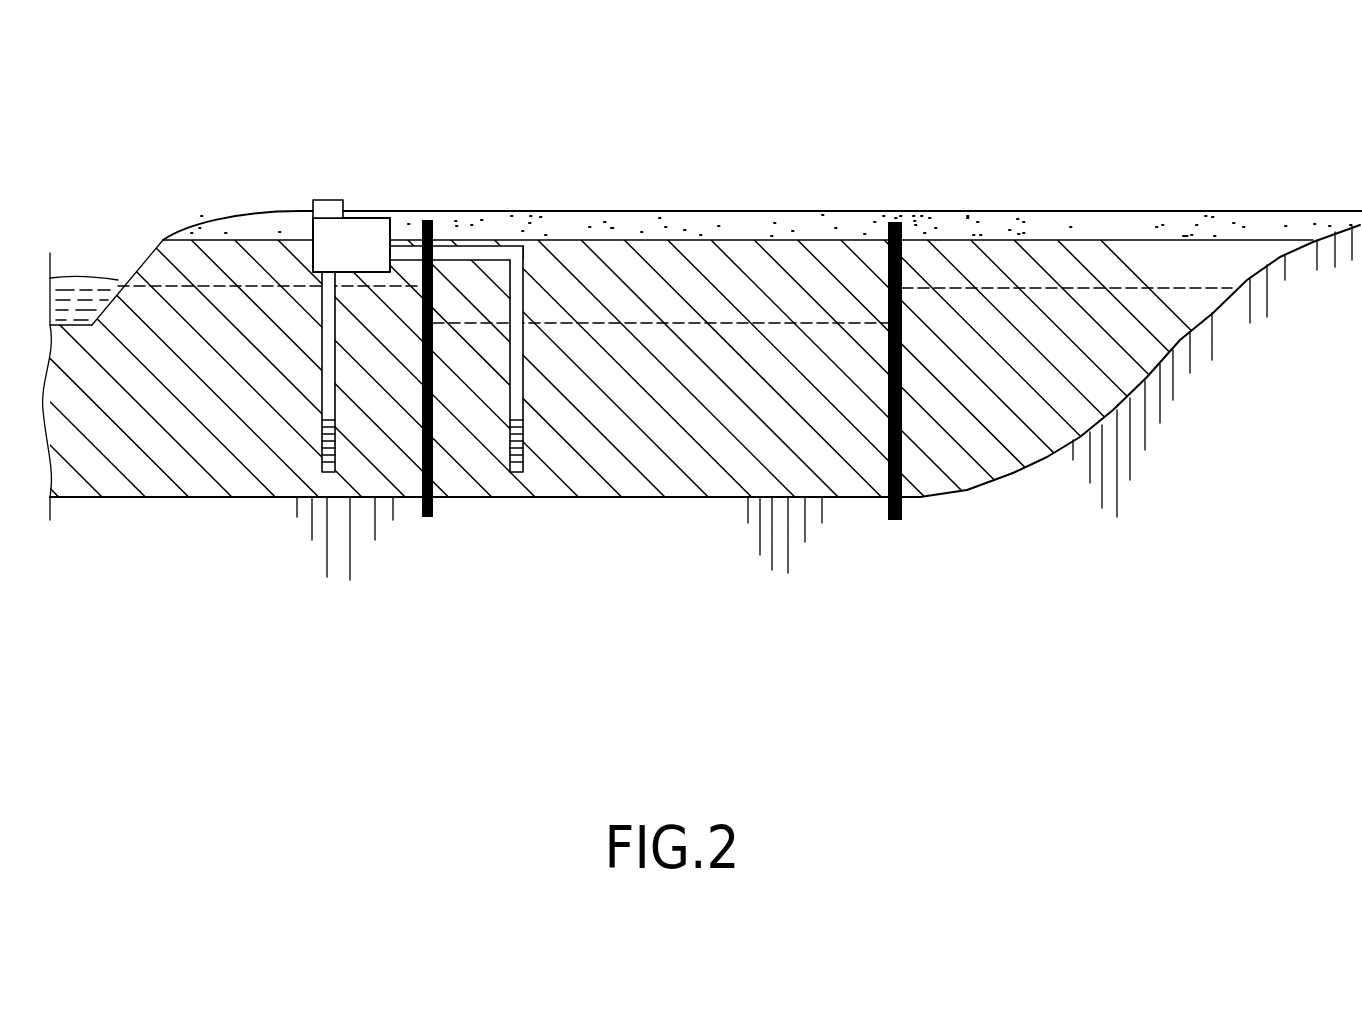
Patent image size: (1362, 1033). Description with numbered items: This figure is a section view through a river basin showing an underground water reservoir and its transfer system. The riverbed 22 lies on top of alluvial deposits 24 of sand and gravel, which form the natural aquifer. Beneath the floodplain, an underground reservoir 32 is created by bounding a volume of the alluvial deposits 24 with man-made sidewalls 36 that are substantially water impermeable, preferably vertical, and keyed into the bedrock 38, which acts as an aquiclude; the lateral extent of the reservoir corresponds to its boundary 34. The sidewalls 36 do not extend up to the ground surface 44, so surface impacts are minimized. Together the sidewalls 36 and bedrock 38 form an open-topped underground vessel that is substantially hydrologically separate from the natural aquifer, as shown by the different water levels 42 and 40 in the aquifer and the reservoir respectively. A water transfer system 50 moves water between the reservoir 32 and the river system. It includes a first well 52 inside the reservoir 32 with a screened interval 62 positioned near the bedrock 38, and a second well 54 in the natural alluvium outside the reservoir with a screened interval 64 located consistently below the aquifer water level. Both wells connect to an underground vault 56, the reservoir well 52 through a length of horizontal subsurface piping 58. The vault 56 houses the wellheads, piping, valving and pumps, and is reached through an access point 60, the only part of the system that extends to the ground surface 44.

The riverbed 22 is at (83, 278).
The alluvial deposits 24 is at (147, 478).
The underground reservoir 32 is at (697, 470).
The boundary 34 is at (891, 172).
The sidewalls 36 is at (427, 517).
The bedrock 38 is at (599, 565).
The water level 40 is at (720, 323).
The water level 42 is at (200, 285).
The ground surface 44 is at (1293, 211).
The water transfer system 50 is at (418, 187).
The first well 52 is at (528, 277).
The second well 54 is at (317, 298).
The underground vault 56 is at (373, 218).
The horizontal subsurface piping 58 is at (490, 240).
The access point 60 is at (327, 200).
The screened interval 62 is at (510, 450).
The screened interval 64 is at (337, 443).